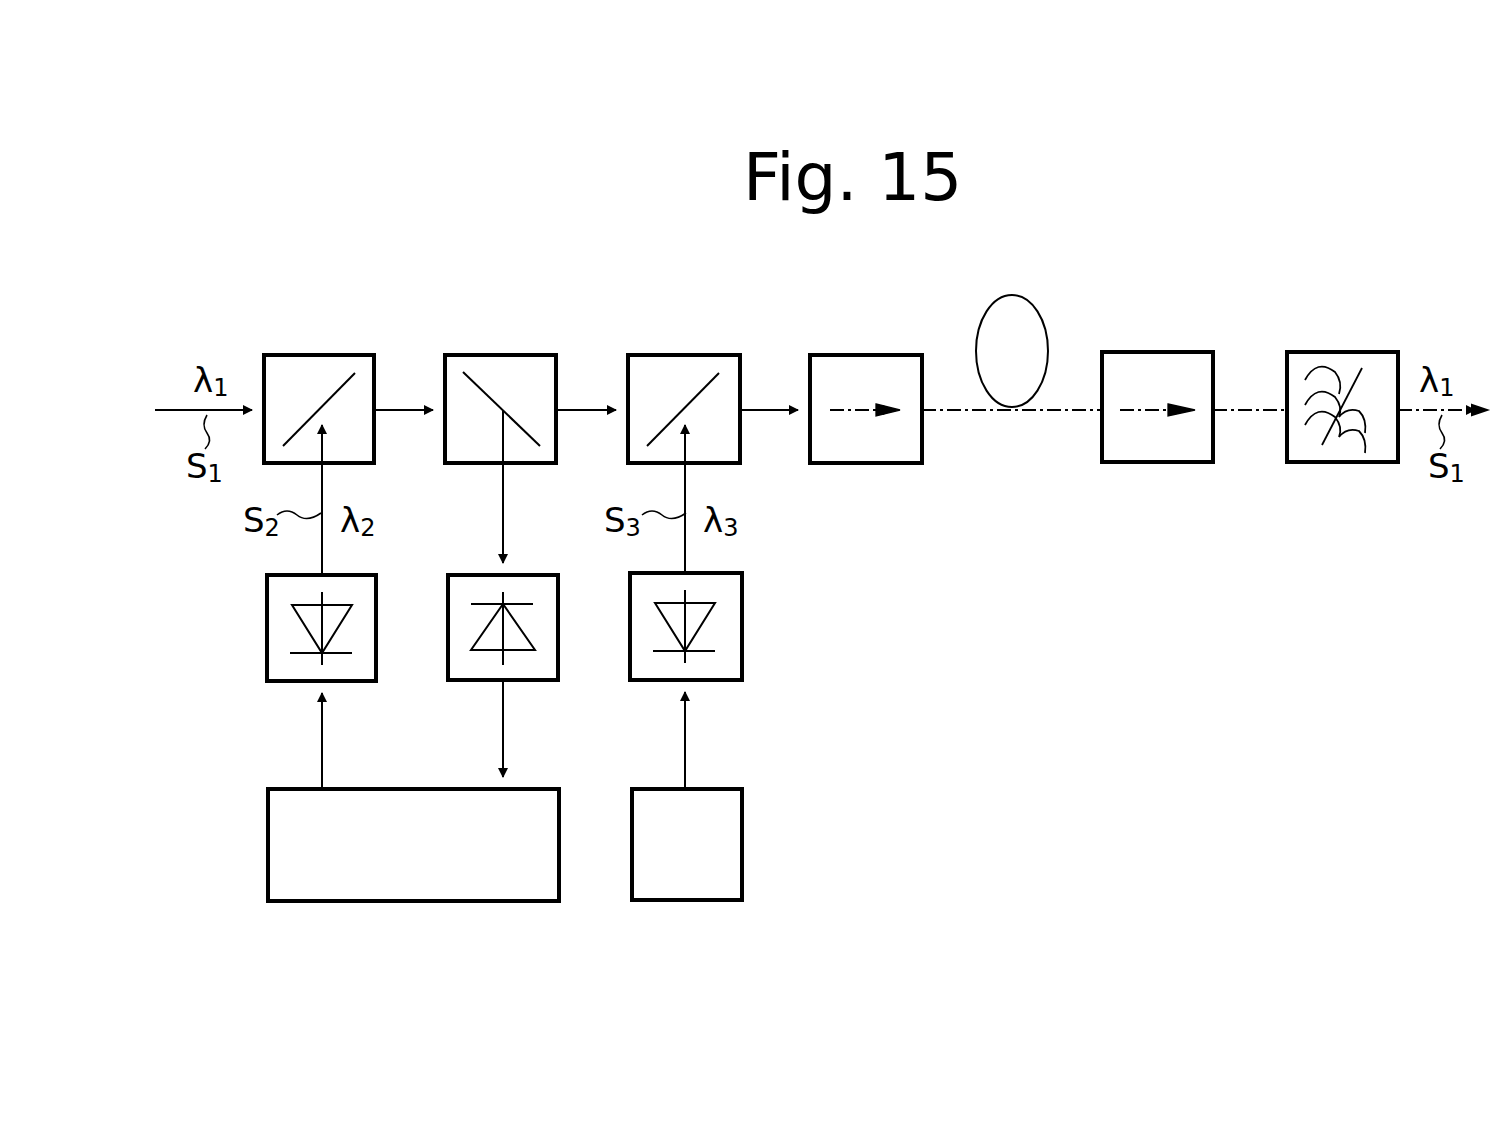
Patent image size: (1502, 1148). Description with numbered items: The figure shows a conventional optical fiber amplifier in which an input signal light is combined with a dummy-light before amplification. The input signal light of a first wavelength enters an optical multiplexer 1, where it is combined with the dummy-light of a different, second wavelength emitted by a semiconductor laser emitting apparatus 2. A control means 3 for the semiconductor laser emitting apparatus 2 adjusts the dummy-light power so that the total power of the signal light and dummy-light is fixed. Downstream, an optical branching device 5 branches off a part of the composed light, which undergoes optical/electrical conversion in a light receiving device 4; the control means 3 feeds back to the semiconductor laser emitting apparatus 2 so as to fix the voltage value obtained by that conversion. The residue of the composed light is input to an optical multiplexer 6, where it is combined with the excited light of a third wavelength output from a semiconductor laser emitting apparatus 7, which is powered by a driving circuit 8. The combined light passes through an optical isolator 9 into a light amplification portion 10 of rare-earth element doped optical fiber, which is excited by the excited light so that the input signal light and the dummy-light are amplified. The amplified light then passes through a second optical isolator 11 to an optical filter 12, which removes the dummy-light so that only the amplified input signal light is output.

The optical multiplexer 1 is at (317, 355).
The semiconductor laser emitting apparatus 2 is at (266, 620).
The control means 3 is at (268, 794).
The light receiving device 4 is at (462, 682).
The optical branching device 5 is at (479, 355).
The optical multiplexer 6 is at (661, 355).
The semiconductor laser emitting apparatus 7 is at (742, 641).
The driving circuit 8 is at (742, 814).
The optical isolator 9 is at (836, 355).
The light amplification portion 10 is at (978, 330).
The optical isolator 11 is at (1157, 355).
The optical filter 12 is at (1305, 355).